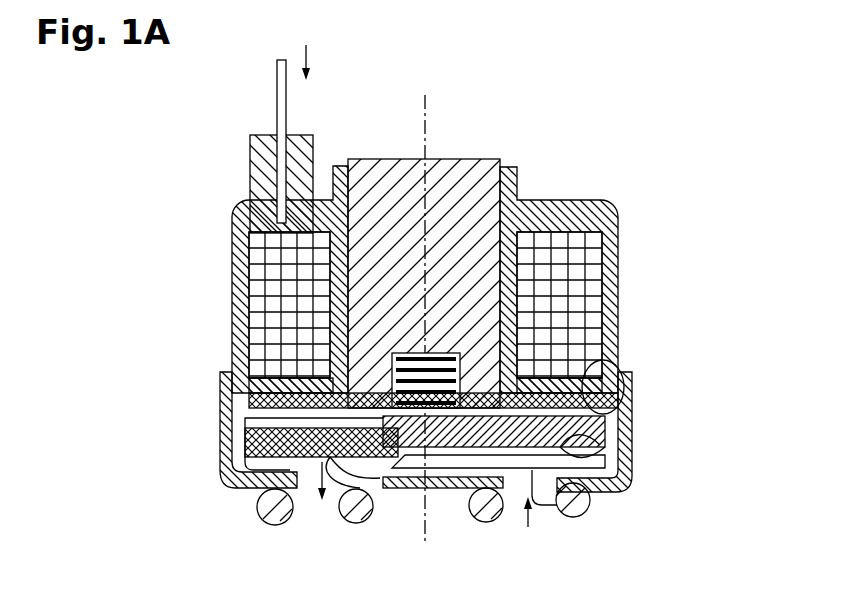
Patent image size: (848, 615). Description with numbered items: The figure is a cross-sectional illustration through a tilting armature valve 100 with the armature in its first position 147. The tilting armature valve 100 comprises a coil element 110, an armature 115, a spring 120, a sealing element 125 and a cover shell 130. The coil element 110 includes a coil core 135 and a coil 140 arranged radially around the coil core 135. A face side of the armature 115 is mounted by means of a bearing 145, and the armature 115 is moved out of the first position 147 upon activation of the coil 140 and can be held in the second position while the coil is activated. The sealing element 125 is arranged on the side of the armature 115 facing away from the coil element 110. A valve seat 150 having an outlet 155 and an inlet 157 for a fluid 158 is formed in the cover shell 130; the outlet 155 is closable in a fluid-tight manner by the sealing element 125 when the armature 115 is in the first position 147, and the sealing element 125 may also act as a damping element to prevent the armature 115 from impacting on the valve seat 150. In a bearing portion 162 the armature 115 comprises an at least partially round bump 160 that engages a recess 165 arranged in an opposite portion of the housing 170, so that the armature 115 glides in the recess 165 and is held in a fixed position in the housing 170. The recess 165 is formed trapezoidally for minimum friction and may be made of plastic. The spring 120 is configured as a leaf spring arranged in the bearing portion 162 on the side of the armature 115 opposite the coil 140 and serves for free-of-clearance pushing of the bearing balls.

The tilting armature valve 100 is at (640, 112).
The coil element 110 is at (660, 265).
The armature 115 is at (383, 470).
The spring 120 is at (453, 448).
The sealing element 125 is at (217, 418).
The cover shell 130 is at (250, 493).
The coil core 135 is at (452, 170).
The coil 140 is at (587, 303).
The bearing 145 is at (646, 418).
The first position 147 is at (176, 440).
The valve seat 150 is at (240, 465).
The outlet 155 is at (330, 520).
The inlet 157 is at (550, 515).
The fluid 158 is at (320, 492).
The bump 160 is at (611, 400).
The bearing portion 162 is at (580, 525).
The recess 165 is at (596, 365).
The housing 170 is at (605, 232).